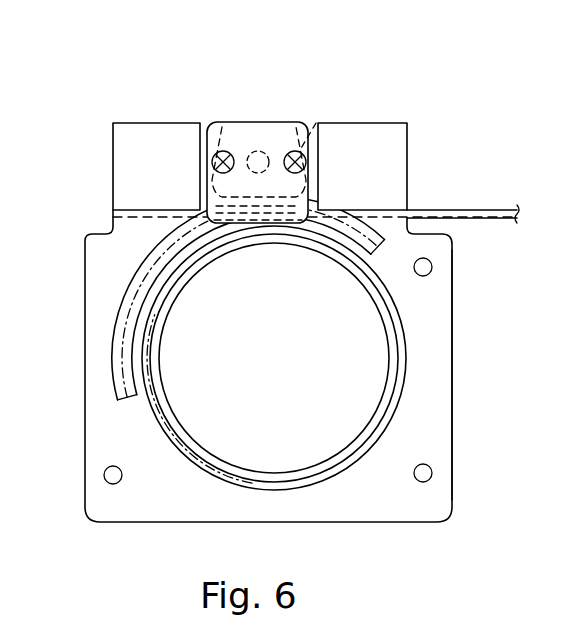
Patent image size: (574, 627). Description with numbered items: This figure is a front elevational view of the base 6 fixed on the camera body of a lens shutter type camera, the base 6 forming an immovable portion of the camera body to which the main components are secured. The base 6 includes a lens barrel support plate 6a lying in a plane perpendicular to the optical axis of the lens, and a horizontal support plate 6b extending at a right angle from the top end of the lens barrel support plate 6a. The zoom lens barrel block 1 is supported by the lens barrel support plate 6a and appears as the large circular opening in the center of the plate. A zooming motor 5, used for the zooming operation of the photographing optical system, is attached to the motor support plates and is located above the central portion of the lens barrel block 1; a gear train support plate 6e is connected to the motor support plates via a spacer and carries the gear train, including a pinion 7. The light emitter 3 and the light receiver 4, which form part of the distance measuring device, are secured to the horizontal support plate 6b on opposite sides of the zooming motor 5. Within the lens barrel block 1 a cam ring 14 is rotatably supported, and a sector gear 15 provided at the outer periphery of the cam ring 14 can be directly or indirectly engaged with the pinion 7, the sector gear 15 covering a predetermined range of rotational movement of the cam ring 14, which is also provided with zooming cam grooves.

The zoom lens barrel block 1 is at (347, 464).
The light emitter 3 is at (402, 125).
The light receiver 4 is at (158, 126).
The zooming motor 5 is at (266, 150).
The base 6 is at (436, 412).
The lens barrel support plate 6a is at (430, 316).
The horizontal support plate 6b is at (428, 211).
The gear train support plate 6e is at (222, 130).
The pinion 7 is at (316, 123).
The cam ring 14 is at (351, 262).
The sector gear 15 is at (130, 306).